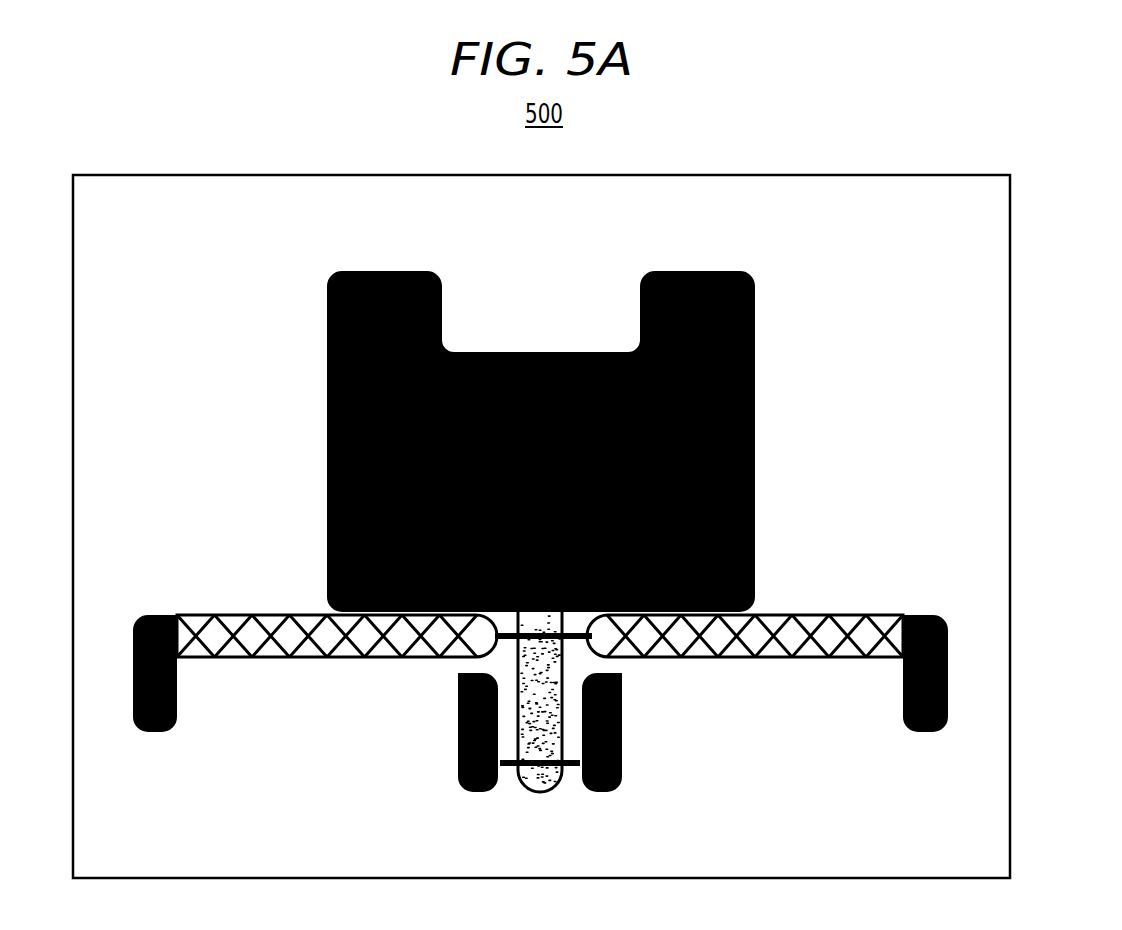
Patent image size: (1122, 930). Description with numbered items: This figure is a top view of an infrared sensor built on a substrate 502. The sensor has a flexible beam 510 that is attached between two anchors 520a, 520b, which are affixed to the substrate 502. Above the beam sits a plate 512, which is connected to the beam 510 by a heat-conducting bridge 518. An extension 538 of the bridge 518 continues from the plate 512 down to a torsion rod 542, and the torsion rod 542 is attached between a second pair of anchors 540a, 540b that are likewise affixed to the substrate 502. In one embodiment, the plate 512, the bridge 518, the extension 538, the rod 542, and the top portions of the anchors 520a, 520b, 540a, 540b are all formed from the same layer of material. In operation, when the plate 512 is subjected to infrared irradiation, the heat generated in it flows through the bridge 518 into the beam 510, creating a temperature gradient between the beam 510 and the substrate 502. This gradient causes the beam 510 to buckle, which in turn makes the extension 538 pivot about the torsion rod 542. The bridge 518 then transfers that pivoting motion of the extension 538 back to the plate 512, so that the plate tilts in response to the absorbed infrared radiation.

The substrate 502 is at (985, 314).
The flexible beam 510 is at (807, 616).
The plate 512 is at (755, 378).
The heat-conducting bridge 518 is at (565, 638).
The anchor 520a is at (155, 735).
The anchor 520b is at (925, 735).
The extension 538 is at (540, 730).
The anchor 540a is at (456, 770).
The anchor 540b is at (622, 770).
The torsion rod 542 is at (573, 770).